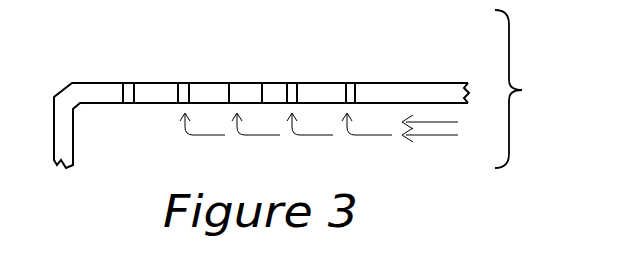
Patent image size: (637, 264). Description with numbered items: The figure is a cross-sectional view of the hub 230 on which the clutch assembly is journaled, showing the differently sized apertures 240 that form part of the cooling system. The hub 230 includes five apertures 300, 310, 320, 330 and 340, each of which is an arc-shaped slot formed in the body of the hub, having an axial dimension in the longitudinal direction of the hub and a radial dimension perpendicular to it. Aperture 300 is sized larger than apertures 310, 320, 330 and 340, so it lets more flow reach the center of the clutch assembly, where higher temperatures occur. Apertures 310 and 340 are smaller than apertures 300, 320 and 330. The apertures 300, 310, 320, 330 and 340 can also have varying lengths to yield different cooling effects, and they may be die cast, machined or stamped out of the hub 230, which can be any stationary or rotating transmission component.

The hub 230 is at (314, 89).
The apertures 240 is at (376, 93).
The aperture 300 is at (230, 92).
The aperture 310 is at (124, 92).
The aperture 320 is at (179, 92).
The aperture 330 is at (288, 92).
The aperture 340 is at (347, 92).